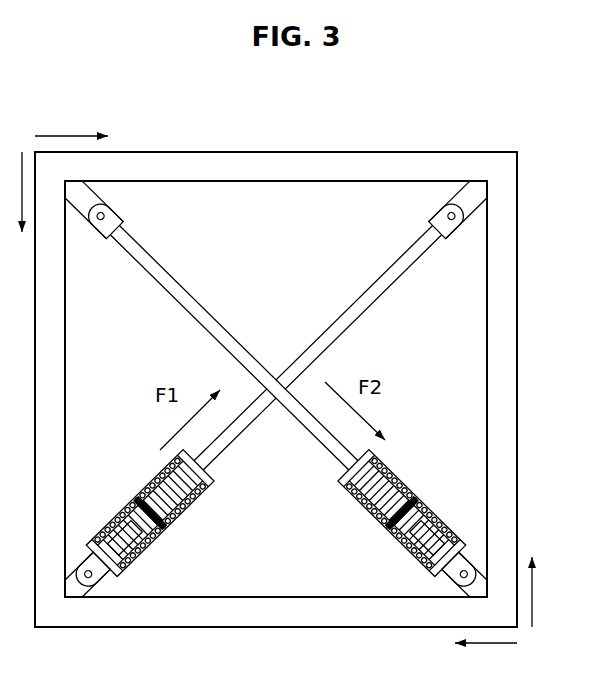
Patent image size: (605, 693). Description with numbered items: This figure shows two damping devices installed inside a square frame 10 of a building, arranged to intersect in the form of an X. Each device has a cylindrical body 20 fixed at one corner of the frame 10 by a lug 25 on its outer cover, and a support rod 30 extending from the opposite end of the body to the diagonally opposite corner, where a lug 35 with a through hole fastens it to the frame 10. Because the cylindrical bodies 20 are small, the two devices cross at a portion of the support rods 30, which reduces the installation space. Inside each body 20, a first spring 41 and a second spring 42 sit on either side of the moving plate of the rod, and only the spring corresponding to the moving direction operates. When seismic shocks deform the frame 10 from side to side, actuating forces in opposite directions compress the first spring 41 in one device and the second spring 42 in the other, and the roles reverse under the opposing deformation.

The frame 10 is at (500, 255).
The cylindrical body 20 is at (158, 540).
The lug 25 is at (102, 575).
The support rod 30 is at (152, 253).
The lug 35 is at (110, 213).
The first spring 41 is at (397, 473).
The second spring 42 is at (433, 507).